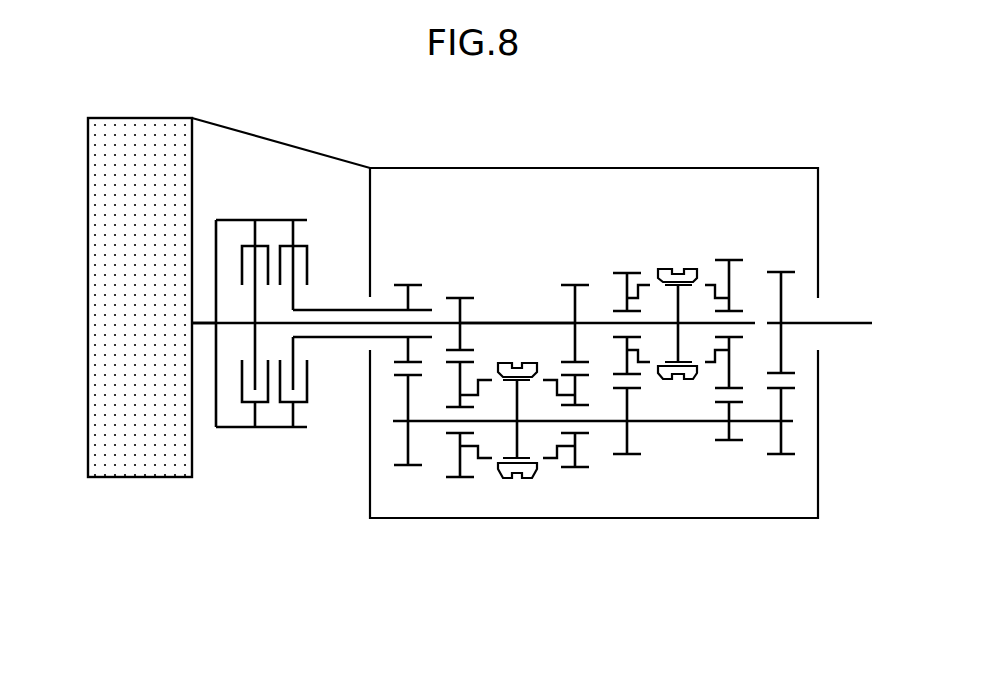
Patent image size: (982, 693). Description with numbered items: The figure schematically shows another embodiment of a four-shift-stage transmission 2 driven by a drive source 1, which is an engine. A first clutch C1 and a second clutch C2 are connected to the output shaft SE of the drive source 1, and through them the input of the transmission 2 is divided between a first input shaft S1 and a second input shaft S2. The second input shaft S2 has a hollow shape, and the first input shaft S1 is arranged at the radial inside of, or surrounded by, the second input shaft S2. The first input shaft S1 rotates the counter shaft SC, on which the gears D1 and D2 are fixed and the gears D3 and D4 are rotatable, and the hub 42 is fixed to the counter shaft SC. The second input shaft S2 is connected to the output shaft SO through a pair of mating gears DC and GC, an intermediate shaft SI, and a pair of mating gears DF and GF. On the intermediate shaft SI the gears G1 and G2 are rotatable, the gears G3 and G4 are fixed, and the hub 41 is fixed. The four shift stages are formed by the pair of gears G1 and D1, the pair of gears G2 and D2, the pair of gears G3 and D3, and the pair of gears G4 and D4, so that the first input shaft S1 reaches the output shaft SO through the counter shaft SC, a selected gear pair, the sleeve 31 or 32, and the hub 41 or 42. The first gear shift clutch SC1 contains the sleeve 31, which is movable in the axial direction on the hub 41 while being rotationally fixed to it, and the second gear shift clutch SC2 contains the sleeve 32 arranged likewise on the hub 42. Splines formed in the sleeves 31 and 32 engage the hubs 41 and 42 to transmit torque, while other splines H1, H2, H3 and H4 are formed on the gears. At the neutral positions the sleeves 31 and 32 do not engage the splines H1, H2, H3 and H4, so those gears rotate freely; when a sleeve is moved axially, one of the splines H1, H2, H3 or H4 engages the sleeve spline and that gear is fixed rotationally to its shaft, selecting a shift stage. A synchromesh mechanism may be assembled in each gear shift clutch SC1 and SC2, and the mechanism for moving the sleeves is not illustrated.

The drive source 1 is at (143, 118).
The transmission 2 is at (415, 168).
The output shaft of the drive source SE is at (208, 322).
The first input shaft S1 is at (347, 322).
The second input shaft S2 is at (323, 310).
The first clutch C1 is at (243, 403).
The second clutch C2 is at (282, 403).
The counter drive gear DC is at (408, 285).
The counter driven gear GC is at (398, 467).
The first shift stage drive gear D1 is at (463, 298).
The first shift stage driven gear G1 is at (455, 480).
The second shift stage drive gear D2 is at (578, 285).
The second shift stage driven gear G2 is at (582, 468).
The third shift stage drive gear D3 is at (626, 273).
The third shift stage driven gear G3 is at (633, 456).
The fourth shift stage drive gear D4 is at (735, 260).
The fourth shift stage driven gear G4 is at (735, 443).
The final driven gear GF is at (797, 382).
The final drive gear DF is at (783, 456).
The counter shaft SC is at (521, 323).
The intermediate shaft SI is at (673, 425).
The transmission output shaft SO is at (823, 323).
The first gear shift clutch SC1 is at (534, 513).
The second gear shift clutch SC2 is at (693, 229).
The spline of the first driven gear H1 is at (492, 459).
The spline of the second driven gear H2 is at (545, 459).
The spline of the third gear H3 is at (650, 284).
The spline of the fourth gear H4 is at (707, 284).
The sleeve 31 is at (527, 479).
The sleeve 32 is at (685, 267).
The hub 41 is at (517, 404).
The hub 42 is at (678, 308).